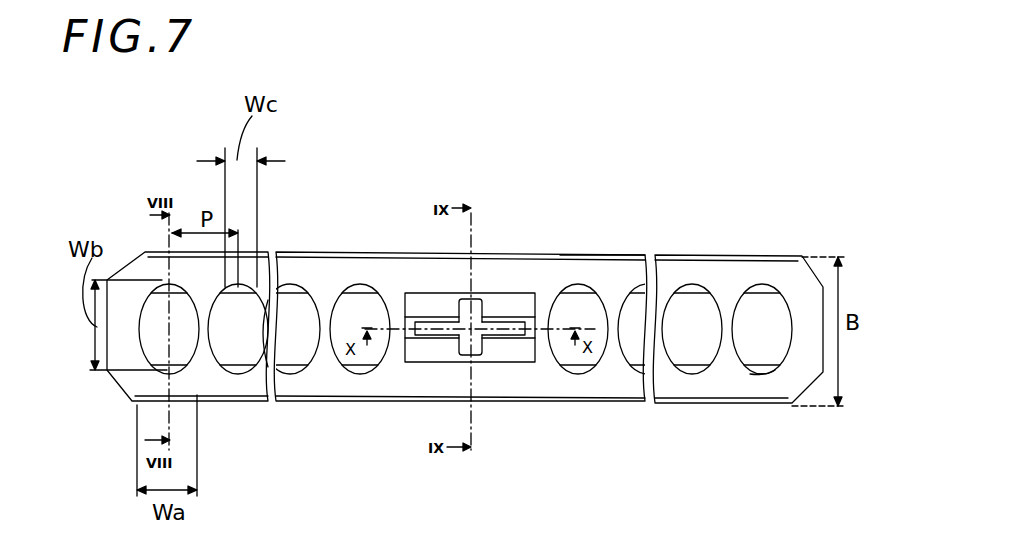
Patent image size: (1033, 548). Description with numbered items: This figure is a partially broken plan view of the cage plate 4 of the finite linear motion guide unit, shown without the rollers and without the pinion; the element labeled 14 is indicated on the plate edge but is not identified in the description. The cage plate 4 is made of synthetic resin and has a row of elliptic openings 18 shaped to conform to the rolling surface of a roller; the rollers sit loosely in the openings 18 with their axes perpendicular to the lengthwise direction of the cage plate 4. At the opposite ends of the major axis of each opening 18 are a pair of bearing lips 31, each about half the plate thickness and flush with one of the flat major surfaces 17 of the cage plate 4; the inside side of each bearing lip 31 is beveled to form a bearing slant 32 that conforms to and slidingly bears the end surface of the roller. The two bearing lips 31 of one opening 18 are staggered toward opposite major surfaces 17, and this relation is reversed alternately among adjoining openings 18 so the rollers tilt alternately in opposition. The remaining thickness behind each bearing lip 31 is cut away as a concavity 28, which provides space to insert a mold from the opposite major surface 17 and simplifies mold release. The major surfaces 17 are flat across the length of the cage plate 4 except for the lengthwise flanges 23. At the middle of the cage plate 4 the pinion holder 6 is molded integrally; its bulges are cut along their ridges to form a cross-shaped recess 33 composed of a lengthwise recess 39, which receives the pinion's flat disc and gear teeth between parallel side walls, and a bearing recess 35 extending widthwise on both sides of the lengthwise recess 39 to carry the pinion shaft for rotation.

The cage plate 4 is at (370, 252).
The pinion holder 6 is at (502, 303).
The link plate 14 is at (328, 252).
The major surface 17 is at (602, 385).
The opening 18 is at (680, 320).
The lengthwise flange 23 is at (612, 257).
The concavity 28 is at (770, 373).
The bearing lip 31 is at (163, 282).
The bearing slant 32 is at (758, 374).
The recess 33 is at (430, 317).
The bearing recess 35 is at (482, 302).
The lengthwise recess 39 is at (440, 338).